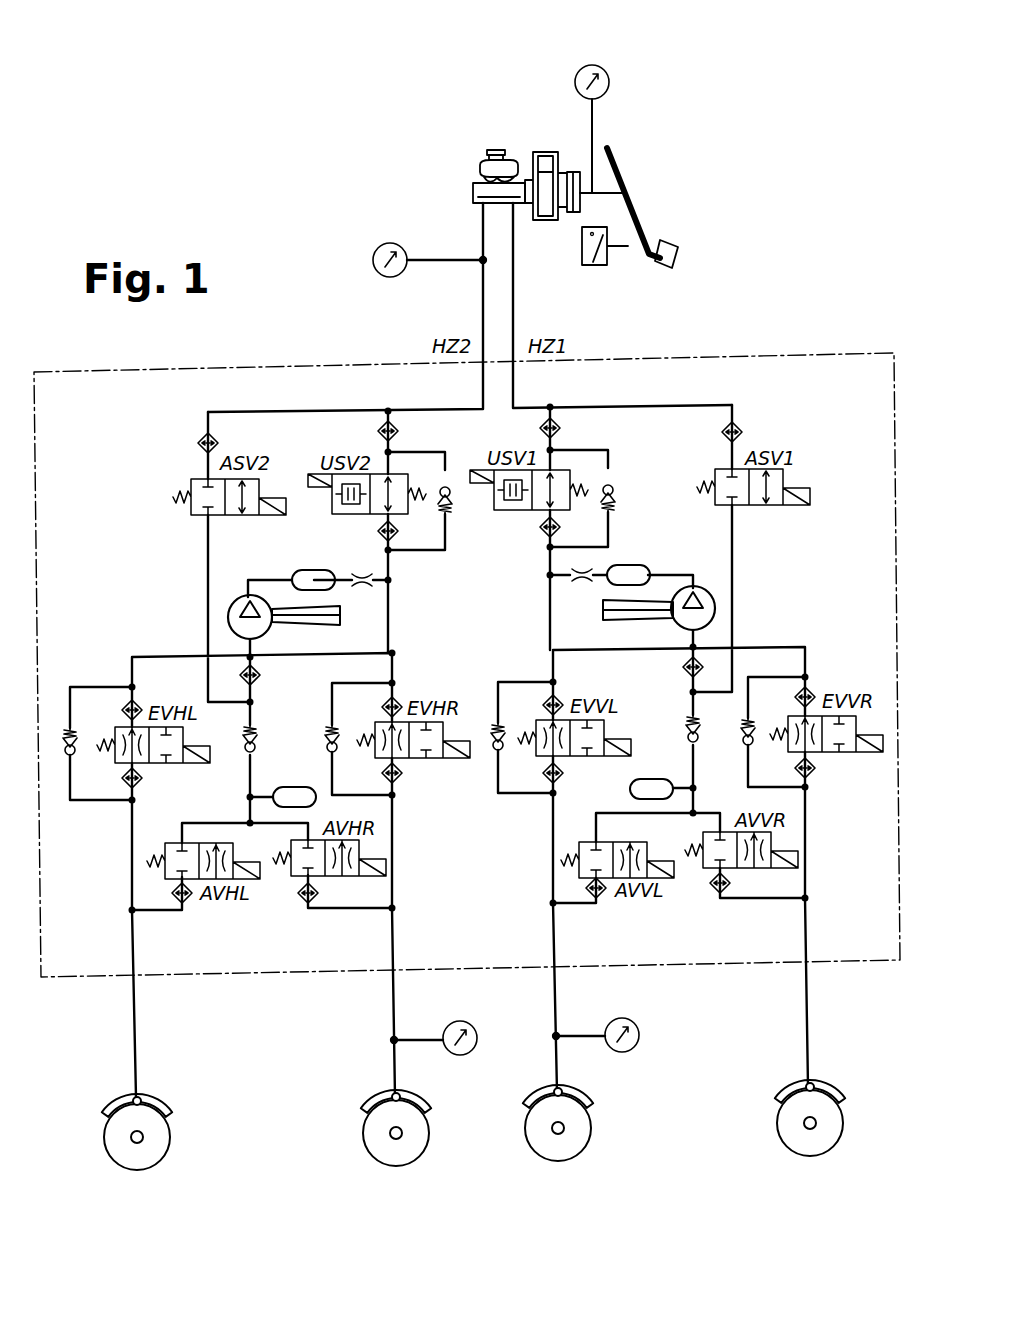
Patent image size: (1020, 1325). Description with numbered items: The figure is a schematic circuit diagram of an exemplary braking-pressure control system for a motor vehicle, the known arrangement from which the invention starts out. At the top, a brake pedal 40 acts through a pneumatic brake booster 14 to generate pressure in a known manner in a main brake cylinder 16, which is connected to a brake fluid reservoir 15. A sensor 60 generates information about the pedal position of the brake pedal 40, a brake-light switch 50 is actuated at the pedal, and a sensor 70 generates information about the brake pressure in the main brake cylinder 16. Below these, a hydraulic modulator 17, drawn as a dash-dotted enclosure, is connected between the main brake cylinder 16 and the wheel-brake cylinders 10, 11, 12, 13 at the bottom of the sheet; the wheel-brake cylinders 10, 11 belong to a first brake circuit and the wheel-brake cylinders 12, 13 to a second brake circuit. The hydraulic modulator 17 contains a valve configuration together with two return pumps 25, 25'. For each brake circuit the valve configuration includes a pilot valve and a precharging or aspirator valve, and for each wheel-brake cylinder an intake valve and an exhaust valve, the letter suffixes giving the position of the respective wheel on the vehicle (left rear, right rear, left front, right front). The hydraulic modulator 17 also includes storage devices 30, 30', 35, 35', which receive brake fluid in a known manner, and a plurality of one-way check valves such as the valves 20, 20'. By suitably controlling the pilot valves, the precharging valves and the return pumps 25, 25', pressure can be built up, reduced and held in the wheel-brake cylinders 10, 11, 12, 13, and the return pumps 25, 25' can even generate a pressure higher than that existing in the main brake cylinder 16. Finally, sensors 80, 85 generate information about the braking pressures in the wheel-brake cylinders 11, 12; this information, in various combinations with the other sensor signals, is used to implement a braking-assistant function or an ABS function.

The wheel-brake cylinder 10 is at (170, 1135).
The wheel-brake cylinder 11 is at (366, 1133).
The wheel-brake cylinder 12 is at (528, 1128).
The wheel-brake cylinder 13 is at (778, 1125).
The pneumatic brake booster 14 is at (546, 151).
The brake fluid reservoir 15 is at (479, 165).
The main brake cylinder 16 is at (473, 199).
The hydraulic modulator 17 is at (724, 353).
The check valve 20 is at (272, 711).
The check valve 20' is at (672, 701).
The return pump 25 is at (280, 591).
The return pump 25' is at (668, 582).
The storage device 30 is at (299, 764).
The storage device 30' is at (653, 756).
The storage device 35 is at (313, 553).
The storage device 35' is at (639, 547).
The brake pedal 40 is at (633, 212).
The brake-light switch 50 is at (582, 252).
The sensor 60 is at (592, 65).
The sensor 70 is at (388, 242).
The sensor 80 is at (462, 1056).
The sensor 85 is at (640, 1040).